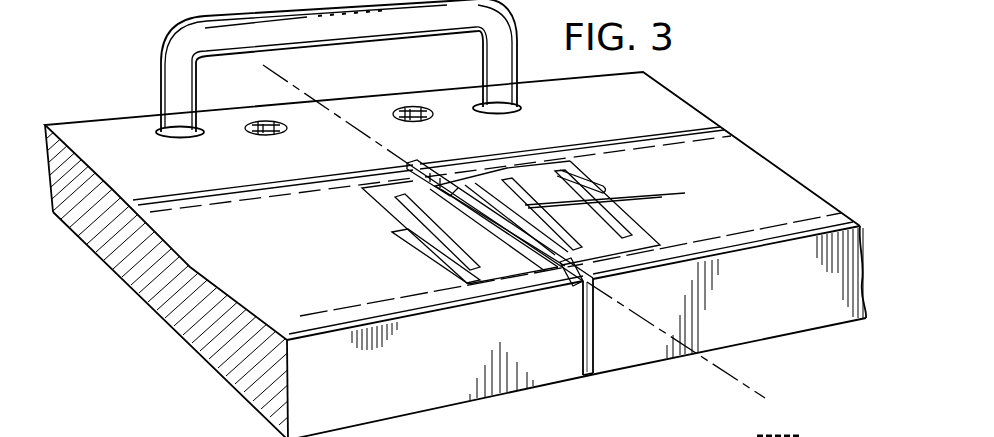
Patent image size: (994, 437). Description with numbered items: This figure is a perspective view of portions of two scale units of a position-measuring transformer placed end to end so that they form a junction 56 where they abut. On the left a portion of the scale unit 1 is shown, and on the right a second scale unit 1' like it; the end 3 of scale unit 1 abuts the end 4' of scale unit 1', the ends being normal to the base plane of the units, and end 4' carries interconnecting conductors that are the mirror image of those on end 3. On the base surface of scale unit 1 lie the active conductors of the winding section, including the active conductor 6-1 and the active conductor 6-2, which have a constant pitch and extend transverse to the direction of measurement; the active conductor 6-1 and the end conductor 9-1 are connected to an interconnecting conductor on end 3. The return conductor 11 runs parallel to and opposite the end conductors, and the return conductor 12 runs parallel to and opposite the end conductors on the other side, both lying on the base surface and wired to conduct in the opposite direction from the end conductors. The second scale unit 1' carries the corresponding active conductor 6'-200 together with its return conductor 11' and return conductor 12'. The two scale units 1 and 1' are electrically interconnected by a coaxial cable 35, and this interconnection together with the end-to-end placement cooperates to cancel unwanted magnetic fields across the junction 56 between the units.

The scale unit 1 is at (733, 308).
The second scale unit 1' is at (323, 229).
The end 3 is at (594, 374).
The end 4' is at (576, 347).
The active conductor 6-1 is at (478, 193).
The active conductor 6-2 is at (515, 192).
The active conductor 6'-200 is at (431, 232).
The end conductor 9-1 is at (441, 178).
The return conductor 11 is at (575, 152).
The return conductor 11' is at (273, 187).
The return conductor 12 is at (727, 224).
The return conductor 12' is at (435, 319).
The coaxial cable 35 is at (499, 41).
The junction 56 is at (289, 78).